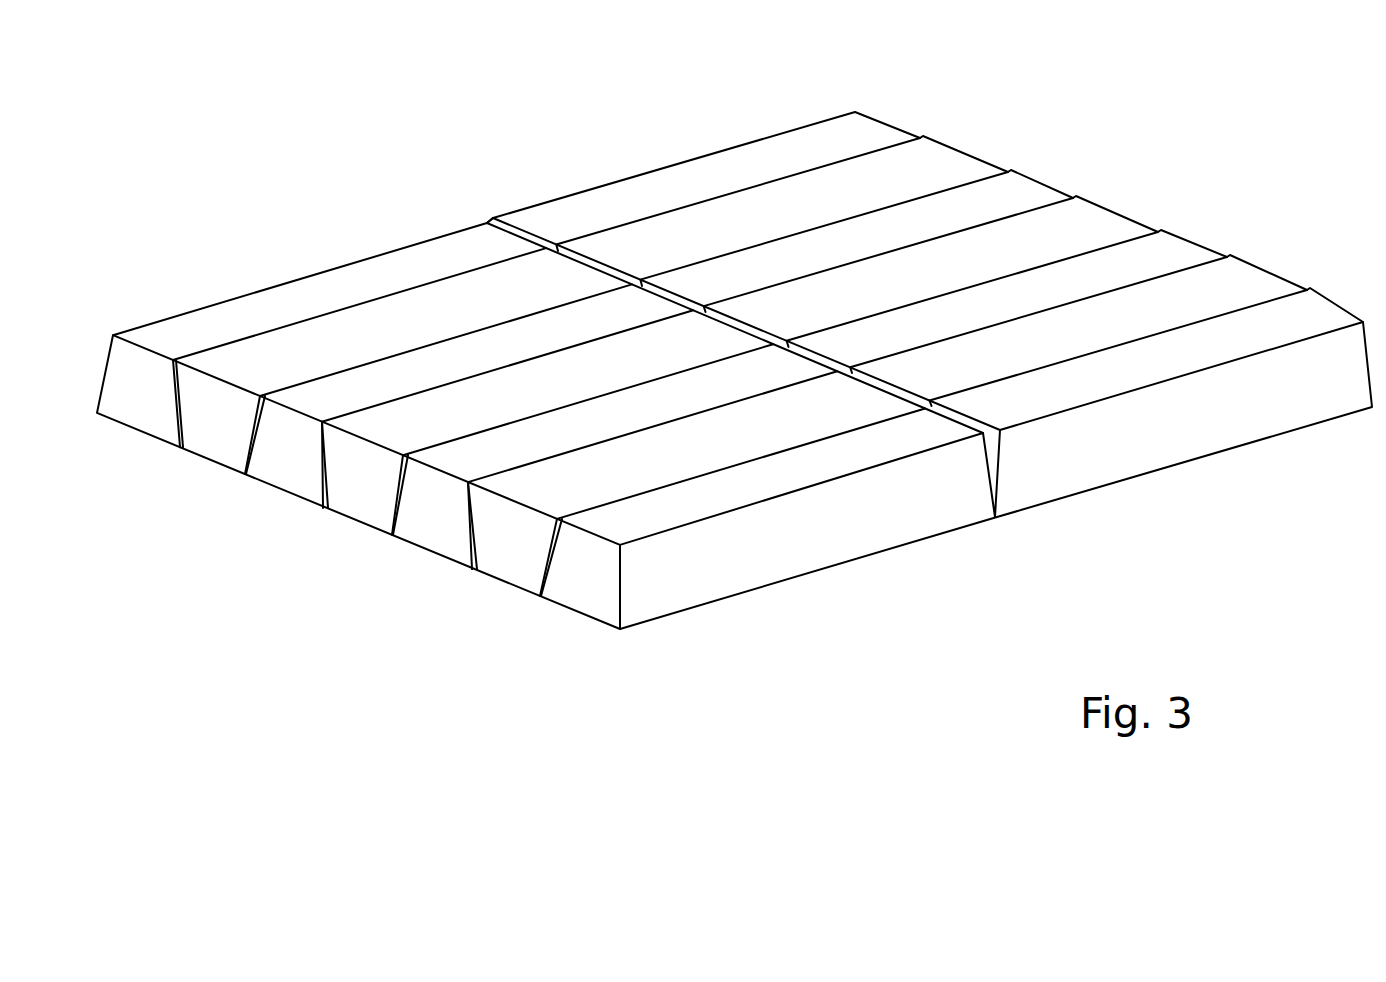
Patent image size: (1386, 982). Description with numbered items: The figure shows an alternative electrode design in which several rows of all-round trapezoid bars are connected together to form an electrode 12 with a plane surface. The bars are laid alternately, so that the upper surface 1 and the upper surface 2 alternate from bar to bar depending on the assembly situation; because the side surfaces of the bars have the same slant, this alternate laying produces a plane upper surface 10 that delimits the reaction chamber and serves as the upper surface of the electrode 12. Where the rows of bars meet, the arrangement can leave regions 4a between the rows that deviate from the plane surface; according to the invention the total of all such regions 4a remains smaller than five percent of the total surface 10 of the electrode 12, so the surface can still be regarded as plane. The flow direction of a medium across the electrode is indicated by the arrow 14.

The upper surface 1 is at (343, 280).
The upper surface 2 is at (255, 370).
The regions deviating from the plane surface 4a is at (486, 218).
The plane upper surface 10 is at (670, 178).
The electrode 12 is at (1243, 214).
The flow direction of a medium 14 is at (455, 220).